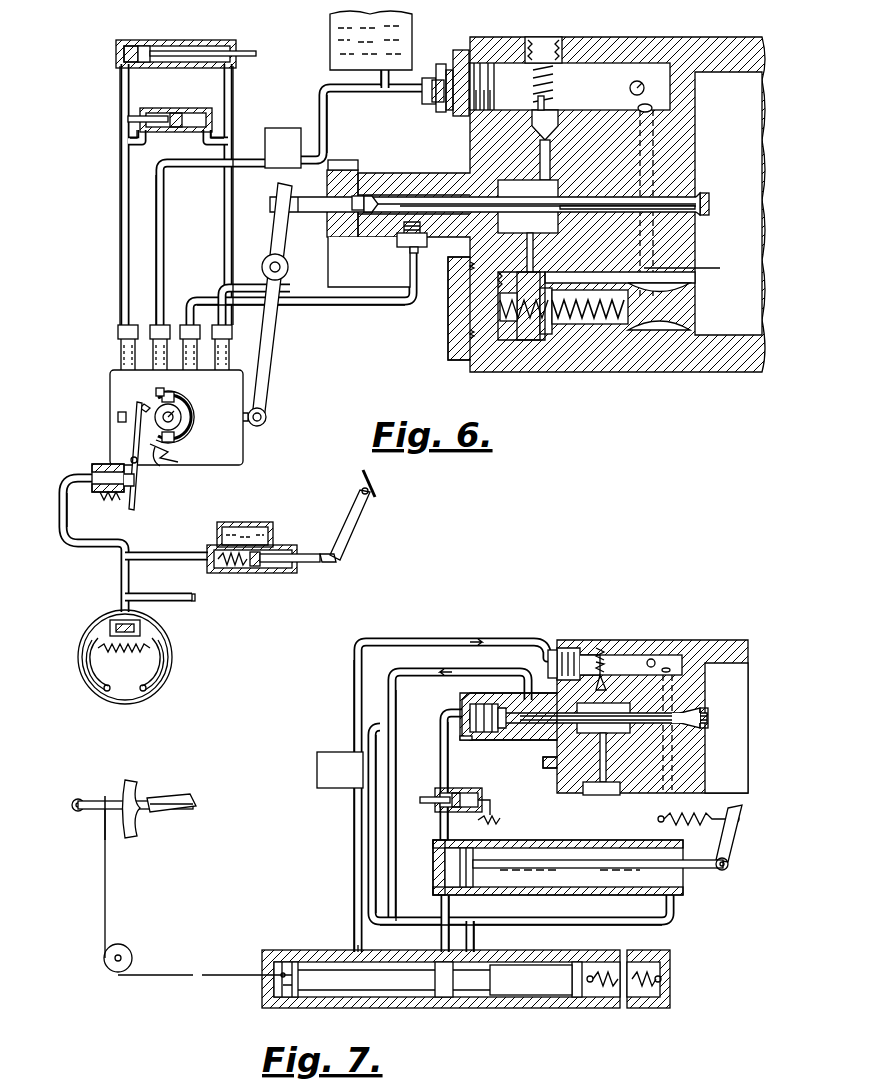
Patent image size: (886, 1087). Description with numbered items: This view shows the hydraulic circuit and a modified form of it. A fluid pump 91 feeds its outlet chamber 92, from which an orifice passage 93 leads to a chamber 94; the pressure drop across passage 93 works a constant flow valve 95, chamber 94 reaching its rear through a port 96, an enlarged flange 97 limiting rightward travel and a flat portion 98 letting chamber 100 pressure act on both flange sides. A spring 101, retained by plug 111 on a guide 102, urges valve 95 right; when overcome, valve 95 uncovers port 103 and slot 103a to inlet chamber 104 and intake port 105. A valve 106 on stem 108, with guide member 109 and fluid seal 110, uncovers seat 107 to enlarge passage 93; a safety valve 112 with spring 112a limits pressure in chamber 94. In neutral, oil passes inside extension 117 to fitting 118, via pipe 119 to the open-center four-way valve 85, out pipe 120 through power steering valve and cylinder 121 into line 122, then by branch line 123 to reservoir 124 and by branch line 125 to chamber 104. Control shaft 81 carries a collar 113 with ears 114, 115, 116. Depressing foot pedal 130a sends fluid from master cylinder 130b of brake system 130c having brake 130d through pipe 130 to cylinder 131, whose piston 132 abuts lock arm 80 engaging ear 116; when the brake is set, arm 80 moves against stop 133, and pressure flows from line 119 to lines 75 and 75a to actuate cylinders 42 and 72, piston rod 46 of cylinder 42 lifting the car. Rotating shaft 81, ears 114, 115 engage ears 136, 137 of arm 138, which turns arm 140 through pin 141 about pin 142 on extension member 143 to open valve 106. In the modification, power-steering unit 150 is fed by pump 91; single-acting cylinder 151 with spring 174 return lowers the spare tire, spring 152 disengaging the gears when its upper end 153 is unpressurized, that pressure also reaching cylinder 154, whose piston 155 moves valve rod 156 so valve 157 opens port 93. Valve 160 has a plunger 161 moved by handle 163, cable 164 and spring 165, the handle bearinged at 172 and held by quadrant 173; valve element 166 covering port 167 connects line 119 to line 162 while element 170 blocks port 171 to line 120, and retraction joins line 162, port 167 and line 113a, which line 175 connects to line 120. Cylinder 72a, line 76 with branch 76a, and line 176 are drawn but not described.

In FIG. 6, the hydraulic cylinder 42 is at (168, 40).
In FIG. 6, the piston rod 46 is at (245, 50).
In FIG. 6, the cylinder 72 is at (170, 108).
In FIG. 7, the cylinder 72a is at (458, 790).
In FIG. 6, the line 75 is at (121, 104).
In FIG. 6, the line 75a is at (128, 150).
In FIG. 6, the conduit 76 is at (232, 102).
In FIG. 6, the conduit branch 76a is at (204, 146).
In FIG. 6, the spring-loaded lock arm 80 is at (132, 436).
In FIG. 6, the control shaft 81 is at (178, 415).
In FIG. 6, the four-way open-center valve 85 is at (228, 460).
In FIG. 6, the fluid pump 91 is at (722, 372).
In FIG. 7, the fluid pump 91 is at (728, 640).
In FIG. 6, the outlet chamber 92 is at (766, 242).
In FIG. 7, the outlet chamber 92 is at (750, 685).
In FIG. 6, the orifice passage 93 is at (700, 192).
In FIG. 7, the orifice passage 93 is at (680, 725).
In FIG. 6, the chamber 94 is at (528, 205).
In FIG. 7, the chamber 94 is at (603, 718).
In FIG. 6, the constant flow valve 95 is at (680, 312).
In FIG. 6, the port 96 is at (522, 240).
In FIG. 7, the port 96 is at (603, 795).
In FIG. 6, the enlarged flange 97 is at (545, 345).
In FIG. 6, the flat portion 98 is at (555, 345).
In FIG. 6, the chamber 100 is at (527, 345).
In FIG. 7, the chamber 100 is at (586, 795).
In FIG. 6, the spring 101 is at (592, 322).
In FIG. 6, the guide 102 is at (468, 320).
In FIG. 6, the port 103 is at (642, 108).
In FIG. 7, the port 103 is at (690, 655).
In FIG. 6, the slot 103a is at (690, 282).
In FIG. 6, the inlet chamber 104 is at (570, 86).
In FIG. 7, the inlet chamber 104 is at (631, 663).
In FIG. 6, the port 105 is at (642, 84).
In FIG. 7, the port 105 is at (654, 660).
In FIG. 6, the valve 106 is at (710, 210).
In FIG. 6, the seat 107 is at (712, 200).
In FIG. 7, the seat 107 is at (708, 728).
In FIG. 6, the valve stem 108 is at (668, 208).
In FIG. 6, the valve stem guide member 109 is at (373, 200).
In FIG. 6, the fluid seal 110 is at (372, 196).
In FIG. 6, the plug 111 is at (468, 340).
In FIG. 7, the plug 111 is at (543, 782).
In FIG. 6, the safety valve 112 is at (552, 118).
In FIG. 7, the safety valve 112 is at (584, 648).
In FIG. 6, the spring 112a is at (533, 94).
In FIG. 7, the spring 112a is at (610, 655).
In FIG. 6, the collar 113 is at (174, 426).
In FIG. 7, the line 113a is at (595, 925).
In FIG. 6, the ear 114 is at (172, 440).
In FIG. 6, the ear 115 is at (170, 394).
In FIG. 6, the ear 116 is at (146, 402).
In FIG. 6, the extension 117 is at (368, 230).
In FIG. 6, the fitting 118 is at (422, 248).
In FIG. 6, the pipe 119 is at (345, 305).
In FIG. 7, the pipe 119 is at (390, 708).
In FIG. 6, the pipe 120 is at (162, 256).
In FIG. 7, the pipe 120 is at (354, 856).
In FIG. 6, the power steering valve and cylinder 121 is at (278, 130).
In FIG. 6, the line 122 is at (324, 118).
In FIG. 6, the branch line 123 is at (385, 86).
In FIG. 6, the reservoir 124 is at (405, 38).
In FIG. 6, the branch line 125 is at (432, 108).
In FIG. 6, the pipe 130 is at (70, 546).
In FIG. 6, the foot pedal 130a is at (380, 486).
In FIG. 6, the foot brake master cylinder 130b is at (258, 524).
In FIG. 6, the hydraulic brake system 130c is at (117, 600).
In FIG. 6, the brake 130d is at (82, 670).
In FIG. 6, the cylinder 131 is at (92, 468).
In FIG. 6, the piston 132 is at (110, 510).
In FIG. 6, the stop 133 is at (116, 418).
In FIG. 6, the ear 136 is at (160, 470).
In FIG. 6, the ear 137 is at (160, 392).
In FIG. 6, the arm 138 is at (243, 424).
In FIG. 6, the arm 140 is at (266, 350).
In FIG. 6, the pivotal connecting pin 141 is at (268, 417).
In FIG. 6, the pin 142 is at (282, 268).
In FIG. 6, the extension member 143 is at (345, 277).
In FIG. 7, the power-steering unit 150 is at (340, 770).
In FIG. 7, the cylinder 151 is at (536, 842).
In FIG. 7, the spring 152 is at (480, 820).
In FIG. 7, the upper end 153 is at (443, 876).
In FIG. 7, the cylinder 154 is at (480, 695).
In FIG. 7, the piston 155 is at (478, 738).
In FIG. 7, the valve rod 156 is at (690, 712).
In FIG. 7, the valve 157 is at (708, 720).
In FIG. 7, the valve 160 is at (445, 1008).
In FIG. 7, the plunger 161 is at (560, 1008).
In FIG. 7, the line 162 is at (444, 938).
In FIG. 7, the control handle 163 is at (170, 796).
In FIG. 7, the control cable 164 is at (106, 890).
In FIG. 7, the spring 165 is at (665, 975).
In FIG. 7, the valve element 166 is at (442, 1008).
In FIG. 7, the port 167 is at (474, 950).
In FIG. 7, the element 170 is at (287, 1008).
In FIG. 7, the port 171 is at (356, 950).
In FIG. 7, the bearing 172 is at (74, 811).
In FIG. 7, the quadrant 173 is at (134, 826).
In FIG. 7, the spring 174 is at (495, 704).
In FIG. 7, the line 175 is at (370, 836).
In FIG. 7, the conduit 176 is at (445, 752).